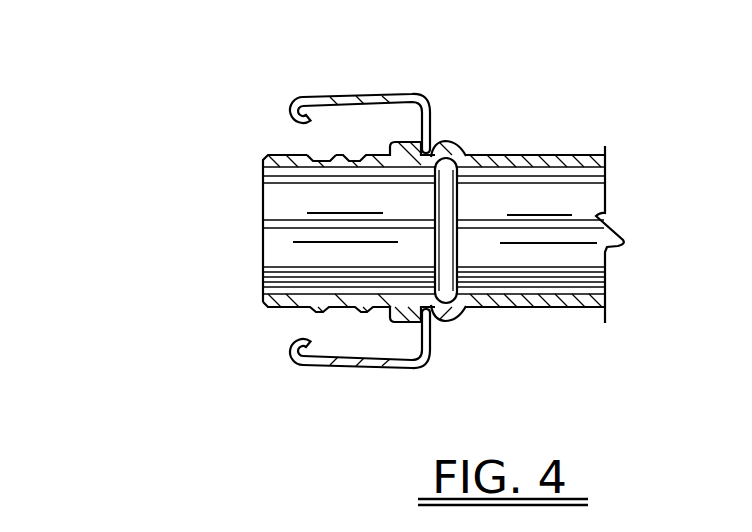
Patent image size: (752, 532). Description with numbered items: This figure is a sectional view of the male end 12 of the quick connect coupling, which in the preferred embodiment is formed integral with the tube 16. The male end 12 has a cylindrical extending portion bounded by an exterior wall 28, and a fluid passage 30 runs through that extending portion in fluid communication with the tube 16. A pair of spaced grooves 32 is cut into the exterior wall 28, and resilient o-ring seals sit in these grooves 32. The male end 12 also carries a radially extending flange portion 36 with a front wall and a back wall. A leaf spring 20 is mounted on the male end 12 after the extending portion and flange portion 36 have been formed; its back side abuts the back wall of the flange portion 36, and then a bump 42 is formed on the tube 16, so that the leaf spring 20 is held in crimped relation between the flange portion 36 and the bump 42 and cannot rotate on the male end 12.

The male end 12 is at (173, 130).
The tube 16 is at (527, 308).
The leaf spring 20 is at (404, 97).
The exterior wall 28 is at (267, 307).
The fluid passage 30 is at (292, 212).
The grooves 32 is at (313, 157).
The flange portion 36 is at (403, 326).
The bump 42 is at (452, 138).